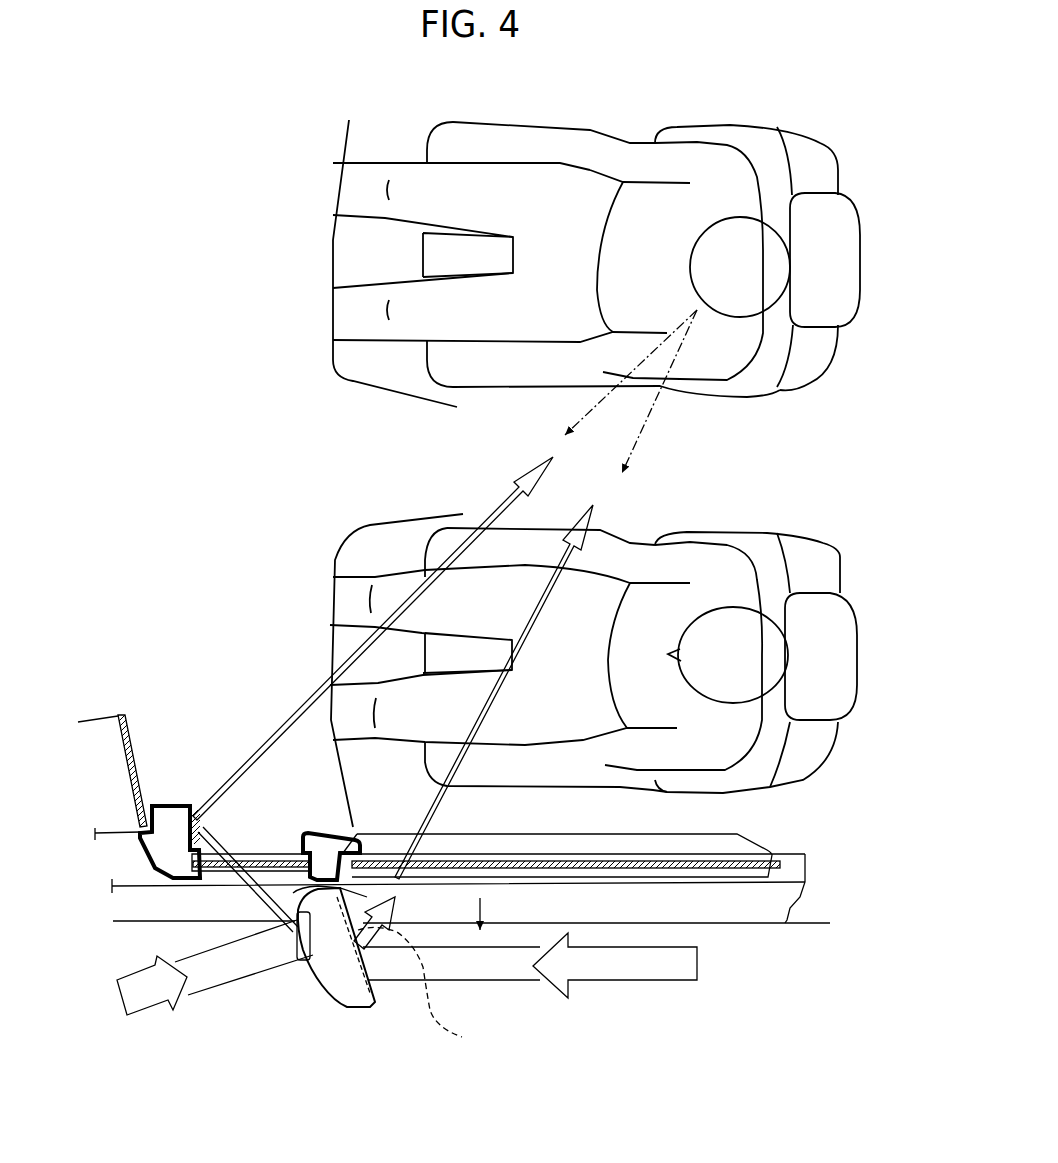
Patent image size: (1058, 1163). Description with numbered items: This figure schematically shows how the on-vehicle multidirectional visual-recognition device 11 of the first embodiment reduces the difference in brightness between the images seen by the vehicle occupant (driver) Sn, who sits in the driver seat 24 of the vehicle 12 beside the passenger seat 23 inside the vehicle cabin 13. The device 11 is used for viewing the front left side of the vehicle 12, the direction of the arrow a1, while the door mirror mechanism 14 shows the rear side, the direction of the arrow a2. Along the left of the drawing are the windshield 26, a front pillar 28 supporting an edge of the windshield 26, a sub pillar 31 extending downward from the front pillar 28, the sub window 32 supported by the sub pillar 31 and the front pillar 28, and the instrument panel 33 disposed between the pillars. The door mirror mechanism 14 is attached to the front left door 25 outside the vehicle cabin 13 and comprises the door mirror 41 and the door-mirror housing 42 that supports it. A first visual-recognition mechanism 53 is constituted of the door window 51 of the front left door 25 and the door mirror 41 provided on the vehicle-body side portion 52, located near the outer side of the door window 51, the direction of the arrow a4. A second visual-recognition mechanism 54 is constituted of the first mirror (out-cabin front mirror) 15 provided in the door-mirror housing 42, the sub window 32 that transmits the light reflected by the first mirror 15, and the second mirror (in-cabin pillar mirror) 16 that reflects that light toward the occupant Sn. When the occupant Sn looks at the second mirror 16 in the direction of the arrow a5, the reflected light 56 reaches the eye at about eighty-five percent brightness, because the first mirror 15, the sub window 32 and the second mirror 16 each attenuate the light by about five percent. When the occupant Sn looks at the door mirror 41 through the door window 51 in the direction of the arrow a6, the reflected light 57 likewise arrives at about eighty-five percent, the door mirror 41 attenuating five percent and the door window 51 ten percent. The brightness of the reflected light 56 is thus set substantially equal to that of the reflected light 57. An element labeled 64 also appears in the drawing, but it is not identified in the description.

The on-vehicle multidirectional visual-recognition device 11 is at (235, 737).
The vehicle 12 is at (302, 90).
The vehicle cabin 13 is at (864, 446).
The door mirror mechanism 14 is at (341, 1010).
The first mirror (out-cabin front mirror) 15 is at (272, 870).
The second mirror (in-cabin pillar mirror) 16 is at (202, 833).
The passenger seat 23 is at (300, 528).
The driver seat 24 is at (313, 372).
The front left door 25 is at (730, 913).
The windshield 26 is at (128, 728).
The front pillar 28 is at (168, 806).
The sub pillar 31 is at (310, 833).
The sub window 32 is at (262, 870).
The instrument panel 33 is at (177, 441).
The door mirror 41 is at (420, 1000).
The door-mirror housing 42 is at (317, 983).
The door window 51 is at (513, 868).
The vehicle-body side portion 52 is at (380, 945).
The first visual-recognition mechanism 53 is at (540, 1069).
The second visual-recognition mechanism 54 is at (277, 1076).
The reflected light 56 is at (498, 508).
The reflected light 57 is at (590, 523).
The seat back cushion 64 is at (702, 130).
The vehicle occupant (driver) Sn is at (750, 192).
The arrow a1 is at (168, 943).
The arrow a2 is at (823, 958).
The arrow a4 is at (492, 912).
The arrow a5 is at (626, 372).
The arrow a6 is at (659, 391).